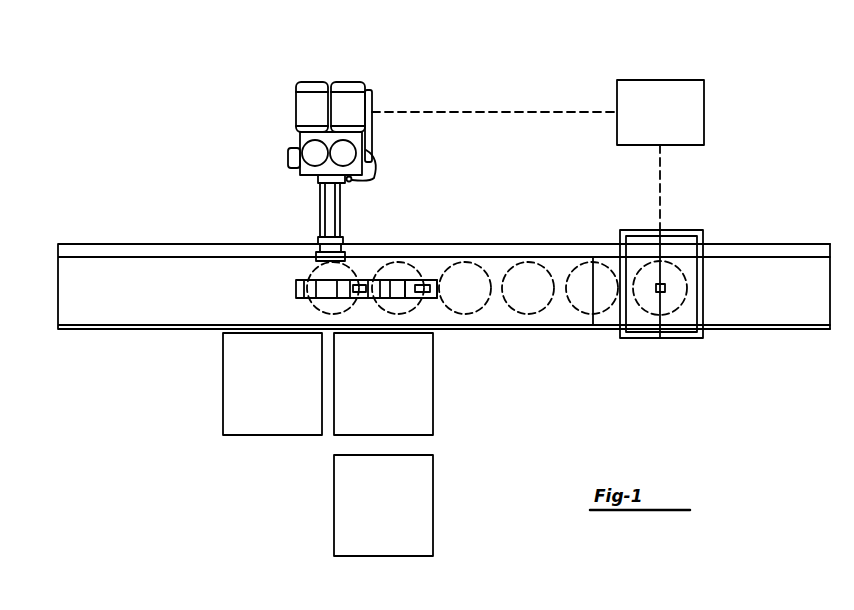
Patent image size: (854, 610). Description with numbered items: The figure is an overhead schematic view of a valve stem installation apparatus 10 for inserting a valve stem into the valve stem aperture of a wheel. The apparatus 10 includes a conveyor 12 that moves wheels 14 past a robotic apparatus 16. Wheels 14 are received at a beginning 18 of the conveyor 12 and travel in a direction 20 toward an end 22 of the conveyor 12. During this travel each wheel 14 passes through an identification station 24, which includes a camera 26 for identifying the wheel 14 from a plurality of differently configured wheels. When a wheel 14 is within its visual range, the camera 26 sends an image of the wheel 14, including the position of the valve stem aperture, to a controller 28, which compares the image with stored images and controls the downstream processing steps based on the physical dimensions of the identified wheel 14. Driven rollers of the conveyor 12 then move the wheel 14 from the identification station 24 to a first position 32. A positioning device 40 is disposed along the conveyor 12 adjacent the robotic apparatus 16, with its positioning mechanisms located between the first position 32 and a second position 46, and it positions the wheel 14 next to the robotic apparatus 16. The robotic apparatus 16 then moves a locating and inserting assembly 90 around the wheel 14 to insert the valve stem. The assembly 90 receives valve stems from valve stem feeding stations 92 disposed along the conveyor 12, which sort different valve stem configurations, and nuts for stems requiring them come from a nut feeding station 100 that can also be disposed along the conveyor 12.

The apparatus 10 is at (263, 57).
The conveyor 12 is at (62, 270).
The wheel 14 is at (530, 282).
The robotic apparatus 16 is at (350, 68).
The beginning of the conveyor 18 is at (790, 334).
The direction 20 is at (410, 231).
The end of the conveyor 22 is at (70, 340).
The identification station 24 is at (670, 350).
The camera 26 is at (665, 288).
The controller 28 is at (685, 93).
The first position 32 is at (465, 331).
The positioning device 40 is at (431, 308).
The second position 46 is at (268, 243).
The locating and inserting assembly 90 is at (326, 283).
The valve stem feeding station 92 is at (262, 398).
The nut feeding station 100 is at (342, 538).